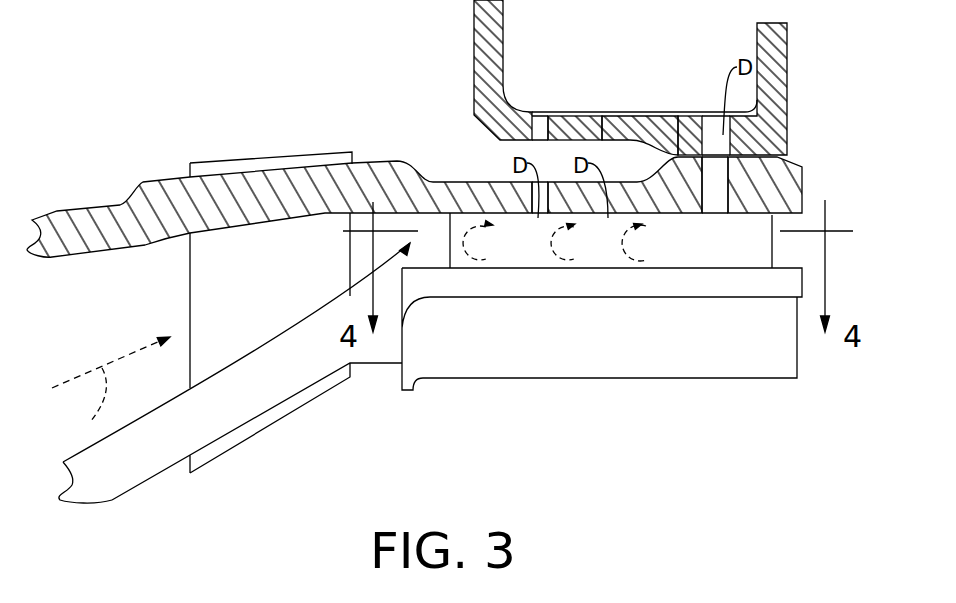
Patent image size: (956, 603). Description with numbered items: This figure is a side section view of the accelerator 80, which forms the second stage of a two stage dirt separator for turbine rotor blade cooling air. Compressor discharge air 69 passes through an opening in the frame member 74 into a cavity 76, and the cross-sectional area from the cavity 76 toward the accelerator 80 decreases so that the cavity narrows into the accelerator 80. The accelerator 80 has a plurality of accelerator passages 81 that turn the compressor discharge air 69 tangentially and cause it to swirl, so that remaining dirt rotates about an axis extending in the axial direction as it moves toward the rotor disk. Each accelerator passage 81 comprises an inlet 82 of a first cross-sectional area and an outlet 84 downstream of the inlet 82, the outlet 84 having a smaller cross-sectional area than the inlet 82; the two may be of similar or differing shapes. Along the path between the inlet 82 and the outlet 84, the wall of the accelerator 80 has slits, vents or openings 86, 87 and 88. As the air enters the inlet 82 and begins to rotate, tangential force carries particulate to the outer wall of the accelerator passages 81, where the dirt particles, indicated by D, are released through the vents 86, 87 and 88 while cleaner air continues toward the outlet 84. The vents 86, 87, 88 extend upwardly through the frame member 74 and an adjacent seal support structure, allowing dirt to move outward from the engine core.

The compressor discharge air 69 is at (464, 241).
The frame member 74 is at (370, 177).
The cavity 76 is at (121, 329).
The accelerator 80 is at (414, 167).
The accelerator passages 81 is at (433, 231).
The inlet 82 is at (400, 268).
The outlet 84 is at (717, 245).
The vent 86 is at (546, 180).
The vent 87 is at (612, 118).
The vent 88 is at (703, 140).